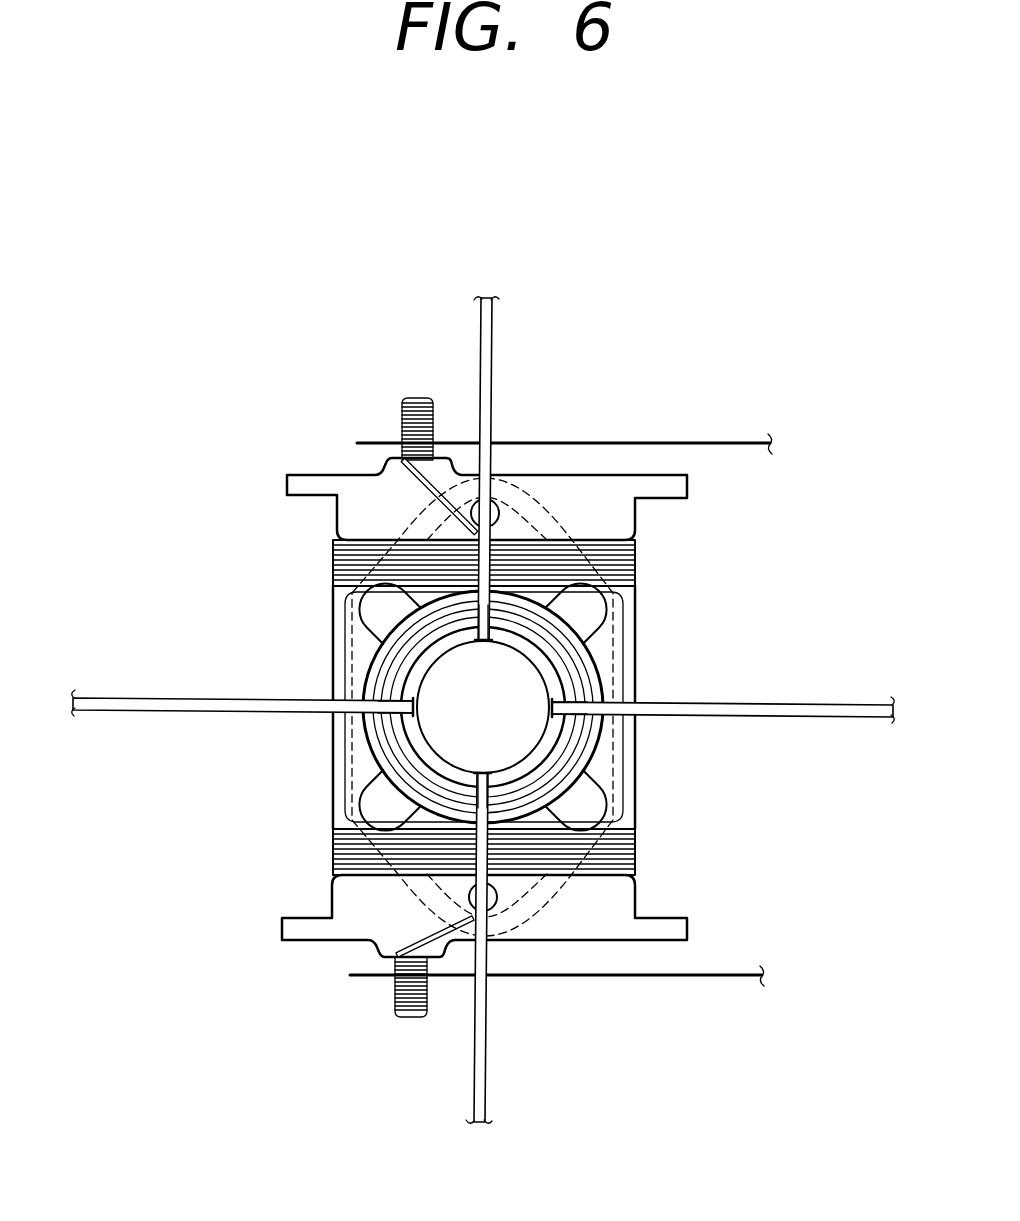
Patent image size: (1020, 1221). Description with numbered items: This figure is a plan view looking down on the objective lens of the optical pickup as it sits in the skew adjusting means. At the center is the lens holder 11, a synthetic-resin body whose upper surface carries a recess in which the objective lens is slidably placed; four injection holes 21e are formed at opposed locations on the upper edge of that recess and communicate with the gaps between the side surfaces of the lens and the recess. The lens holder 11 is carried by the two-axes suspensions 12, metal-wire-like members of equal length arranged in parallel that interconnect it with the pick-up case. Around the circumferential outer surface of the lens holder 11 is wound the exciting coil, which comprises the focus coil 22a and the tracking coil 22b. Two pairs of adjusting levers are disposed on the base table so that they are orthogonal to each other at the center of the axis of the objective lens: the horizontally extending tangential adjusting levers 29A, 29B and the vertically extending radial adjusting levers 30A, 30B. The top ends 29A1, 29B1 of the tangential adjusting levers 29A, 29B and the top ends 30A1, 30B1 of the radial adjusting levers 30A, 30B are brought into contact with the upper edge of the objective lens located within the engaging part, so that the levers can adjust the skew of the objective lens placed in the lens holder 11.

The lens holder 11 is at (352, 487).
The 2-axes suspension 12 is at (640, 441).
The injection hole 21e is at (593, 610).
The focus coil 22a is at (535, 507).
The tracking coil 22b is at (335, 538).
The tangential adjusting lever 29A is at (158, 698).
The top end of tangential adjusting lever 29A1 is at (405, 722).
The tangential adjusting lever 29B is at (838, 707).
The top end of tangential adjusting lever 29B1 is at (558, 700).
The radial adjusting lever 30A is at (490, 347).
The top end of radial adjusting lever 30A1 is at (440, 625).
The radial adjusting lever 30B is at (485, 1097).
The top end of radial adjusting lever 30B1 is at (550, 800).